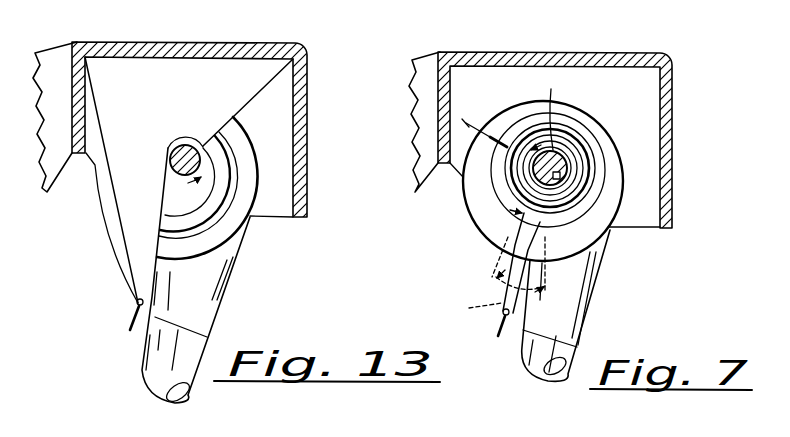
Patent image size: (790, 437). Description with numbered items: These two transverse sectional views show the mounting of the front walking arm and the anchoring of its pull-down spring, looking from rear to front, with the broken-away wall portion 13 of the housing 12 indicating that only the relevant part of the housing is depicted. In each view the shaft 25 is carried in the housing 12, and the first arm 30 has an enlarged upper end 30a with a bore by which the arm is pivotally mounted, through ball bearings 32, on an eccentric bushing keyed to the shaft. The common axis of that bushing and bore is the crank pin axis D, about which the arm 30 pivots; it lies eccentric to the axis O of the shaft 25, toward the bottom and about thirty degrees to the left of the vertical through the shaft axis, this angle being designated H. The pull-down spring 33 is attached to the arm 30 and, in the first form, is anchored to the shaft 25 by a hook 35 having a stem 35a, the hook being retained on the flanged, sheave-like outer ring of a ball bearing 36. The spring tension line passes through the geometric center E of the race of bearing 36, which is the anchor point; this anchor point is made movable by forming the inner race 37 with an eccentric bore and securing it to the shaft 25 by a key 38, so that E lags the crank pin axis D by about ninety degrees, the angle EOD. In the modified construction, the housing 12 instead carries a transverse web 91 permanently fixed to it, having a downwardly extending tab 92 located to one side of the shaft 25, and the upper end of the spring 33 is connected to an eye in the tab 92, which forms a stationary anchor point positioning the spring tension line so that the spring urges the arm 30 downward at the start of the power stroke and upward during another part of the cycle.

In FIG. 13, the housing 12 is at (232, 43).
In FIG. 7, the housing 12 is at (577, 55).
In FIG. 13, the broken-away housing wall 13 is at (57, 47).
In FIG. 7, the broken-away housing wall 13 is at (423, 53).
In FIG. 13, the transverse web 91 is at (143, 91).
In FIG. 13, the tab 92 is at (133, 288).
In FIG. 13, the enlarged upper end 30a is at (242, 131).
In FIG. 7, the enlarged upper end 30a is at (603, 235).
In FIG. 13, the shaft 25 is at (197, 173).
In FIG. 7, the shaft 25 is at (572, 178).
In FIG. 13, the pull-down spring 33 is at (128, 325).
In FIG. 7, the pull-down spring 33 is at (498, 328).
In FIG. 7, the first arm 30 is at (577, 350).
In FIG. 7, the hook 35 is at (562, 120).
In FIG. 7, the ball bearing 36 is at (575, 143).
In FIG. 7, the inner race 37 is at (560, 149).
In FIG. 7, the key 38 is at (528, 163).
In FIG. 7, the ball bearings 32 is at (512, 222).
In FIG. 7, the stem 35a is at (505, 290).
In FIG. 7, the axis of the shaft O is at (551, 112).
In FIG. 7, the anchor point E is at (484, 121).
In FIG. 7, the crank pin axis D is at (510, 210).
In FIG. 7, the angle H is at (479, 310).